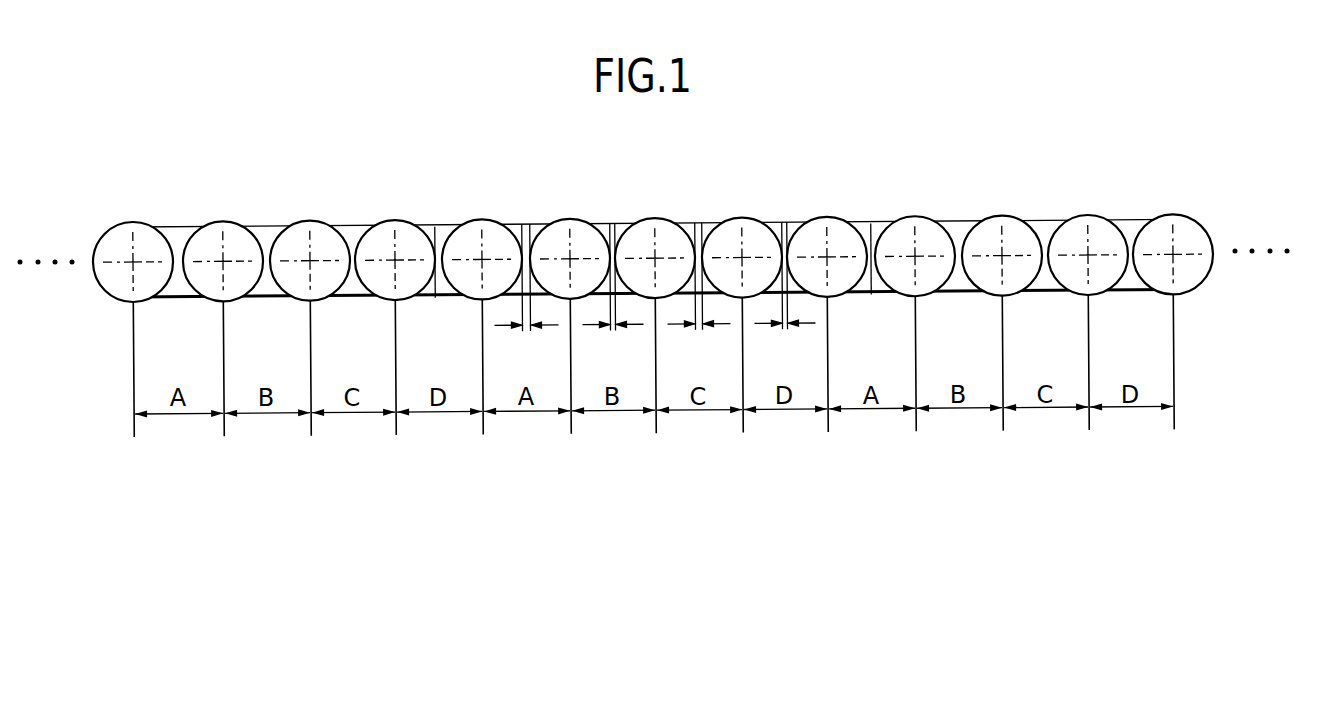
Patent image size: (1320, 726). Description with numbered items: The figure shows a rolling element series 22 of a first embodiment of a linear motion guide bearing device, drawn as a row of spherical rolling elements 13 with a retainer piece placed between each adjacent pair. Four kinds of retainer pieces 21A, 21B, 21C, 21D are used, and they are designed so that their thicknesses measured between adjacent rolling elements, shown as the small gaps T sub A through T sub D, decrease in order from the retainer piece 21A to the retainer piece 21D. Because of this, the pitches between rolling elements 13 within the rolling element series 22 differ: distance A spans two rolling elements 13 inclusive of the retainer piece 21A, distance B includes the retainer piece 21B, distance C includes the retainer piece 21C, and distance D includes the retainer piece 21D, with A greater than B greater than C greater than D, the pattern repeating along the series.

The rolling element 13 is at (482, 220).
The retainer piece 21A is at (524, 232).
The retainer piece 21B is at (610, 232).
The retainer piece 21C is at (696, 232).
The retainer piece 21D is at (436, 232).
The rolling element series 22 is at (918, 197).